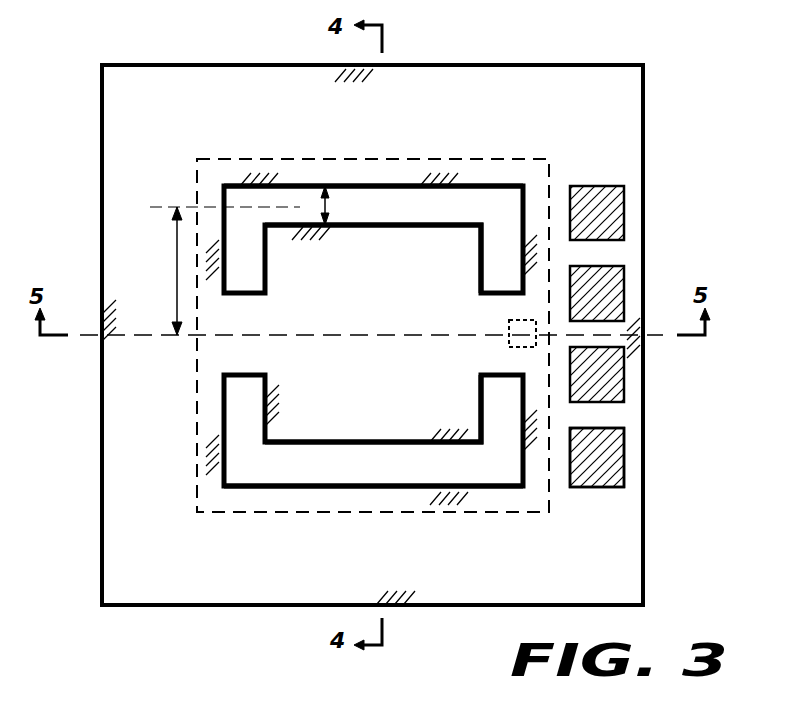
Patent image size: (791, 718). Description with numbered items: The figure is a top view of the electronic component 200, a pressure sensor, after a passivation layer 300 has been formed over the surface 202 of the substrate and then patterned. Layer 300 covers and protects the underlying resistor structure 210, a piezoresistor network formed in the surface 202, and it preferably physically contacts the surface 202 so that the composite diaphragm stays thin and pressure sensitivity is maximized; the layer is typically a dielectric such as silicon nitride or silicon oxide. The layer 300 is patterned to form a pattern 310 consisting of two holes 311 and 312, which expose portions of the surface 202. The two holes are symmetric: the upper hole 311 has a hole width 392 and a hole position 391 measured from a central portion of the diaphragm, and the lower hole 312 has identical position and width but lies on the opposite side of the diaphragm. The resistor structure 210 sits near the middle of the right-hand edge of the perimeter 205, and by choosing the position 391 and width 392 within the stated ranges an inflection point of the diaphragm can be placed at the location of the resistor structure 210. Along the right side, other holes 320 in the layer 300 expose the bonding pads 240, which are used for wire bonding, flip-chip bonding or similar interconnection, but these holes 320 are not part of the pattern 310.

The electronic component 200 is at (463, 675).
The surface 202 is at (420, 191).
The perimeter 205 is at (340, 159).
The resistor structure 210 is at (509, 325).
The bonding pads 240 is at (597, 496).
The passivation layer 300 is at (186, 573).
The pattern 310 is at (423, 245).
The hole 311 is at (490, 186).
The hole 312 is at (488, 488).
The holes 320 is at (624, 210).
The hole position 391 is at (177, 274).
The hole width 392 is at (328, 207).